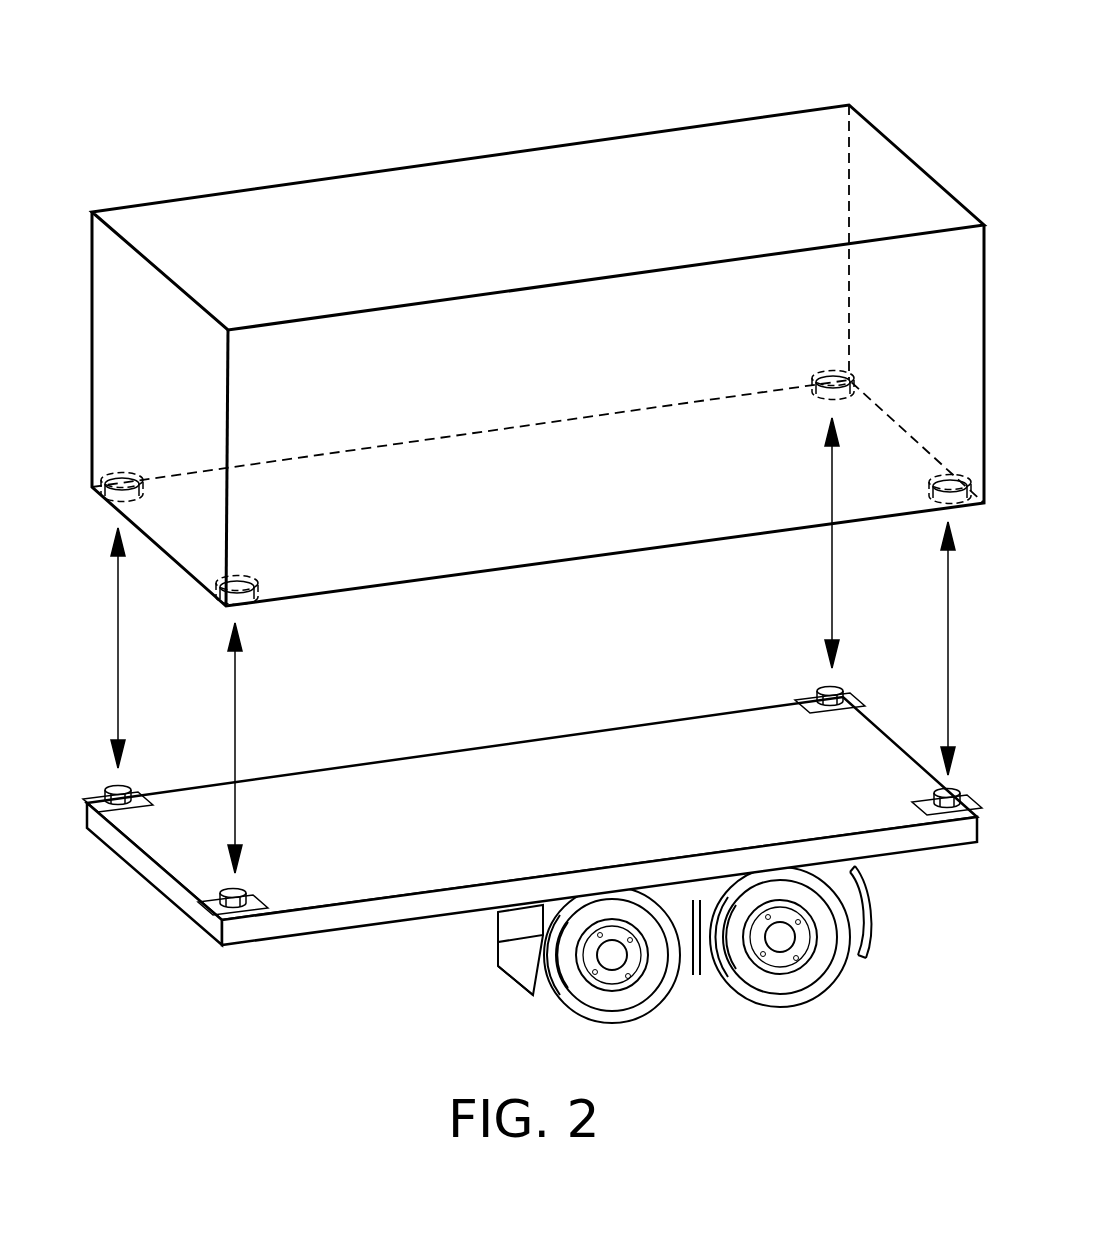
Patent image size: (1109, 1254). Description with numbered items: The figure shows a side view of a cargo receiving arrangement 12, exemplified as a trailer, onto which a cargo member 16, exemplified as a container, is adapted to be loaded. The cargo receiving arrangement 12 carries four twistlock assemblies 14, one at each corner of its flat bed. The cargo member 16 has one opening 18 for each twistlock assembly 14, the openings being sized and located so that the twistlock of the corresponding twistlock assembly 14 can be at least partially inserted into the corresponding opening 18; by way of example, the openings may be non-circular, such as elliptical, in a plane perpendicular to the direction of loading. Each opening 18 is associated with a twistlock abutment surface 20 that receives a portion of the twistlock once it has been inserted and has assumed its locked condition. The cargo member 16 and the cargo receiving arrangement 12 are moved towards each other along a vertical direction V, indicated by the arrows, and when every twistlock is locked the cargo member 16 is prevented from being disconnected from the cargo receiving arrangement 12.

The cargo receiving arrangement 12 is at (452, 705).
The twistlock assembly 14 is at (118, 812).
The cargo member 16 is at (530, 217).
The opening 18 is at (118, 472).
The twistlock abutment surface 20 is at (100, 470).
The vertical direction V is at (118, 645).